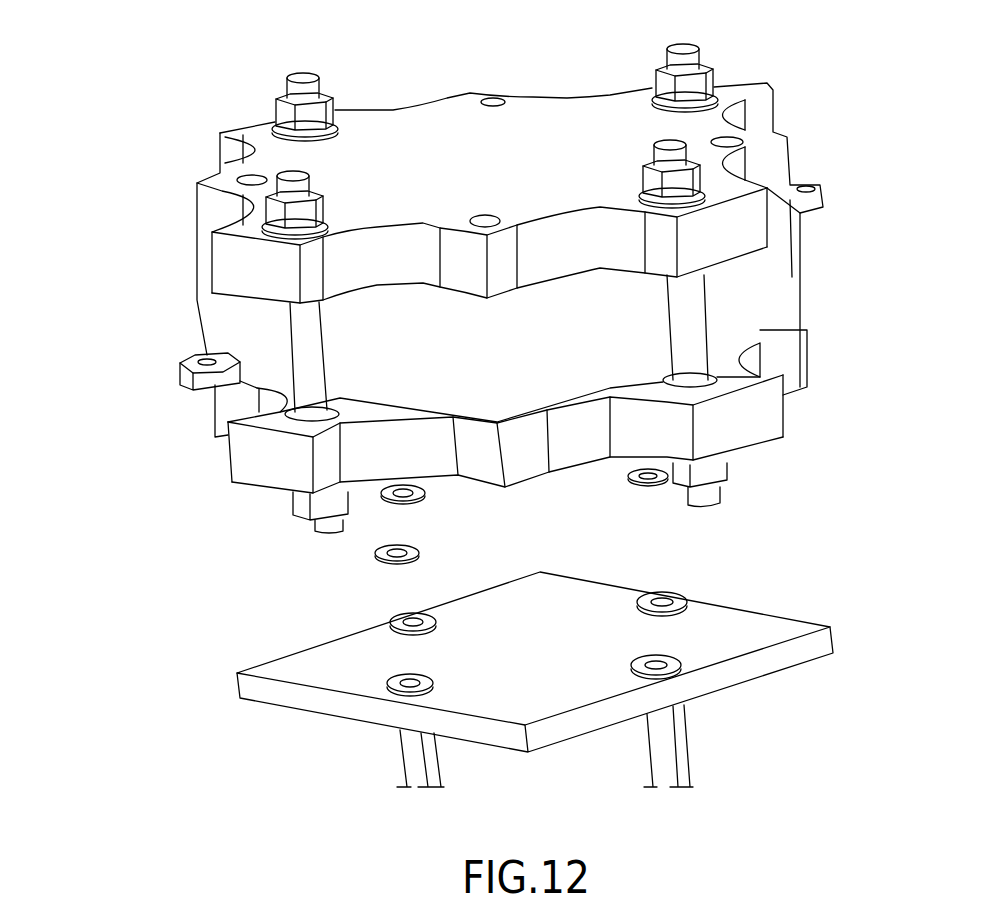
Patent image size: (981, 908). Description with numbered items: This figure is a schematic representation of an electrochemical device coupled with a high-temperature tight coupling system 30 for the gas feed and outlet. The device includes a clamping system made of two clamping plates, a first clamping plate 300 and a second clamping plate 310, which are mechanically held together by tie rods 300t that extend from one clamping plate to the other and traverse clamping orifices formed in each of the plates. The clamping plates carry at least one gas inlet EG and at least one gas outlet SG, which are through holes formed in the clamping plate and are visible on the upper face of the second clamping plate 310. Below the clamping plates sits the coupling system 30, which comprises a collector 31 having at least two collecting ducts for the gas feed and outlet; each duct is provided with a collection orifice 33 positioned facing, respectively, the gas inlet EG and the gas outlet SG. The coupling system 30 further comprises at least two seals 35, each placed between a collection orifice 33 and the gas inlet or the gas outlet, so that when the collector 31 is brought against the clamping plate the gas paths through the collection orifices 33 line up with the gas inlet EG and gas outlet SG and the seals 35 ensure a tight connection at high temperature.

The second clamping plate 310 is at (197, 215).
The first clamping plate 300 is at (257, 457).
The tie rods 300t is at (307, 348).
The coupling system 30 is at (456, 668).
The collector 31 is at (307, 663).
The collection orifice 33 is at (433, 686).
The seals 35 is at (630, 480).
The gas inlet EG is at (483, 215).
The gas outlet SG is at (496, 97).